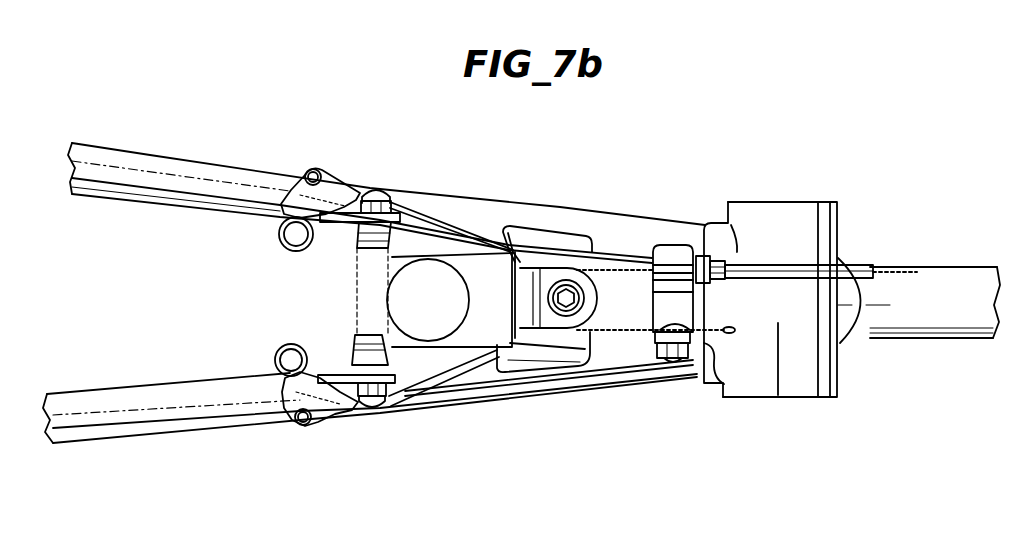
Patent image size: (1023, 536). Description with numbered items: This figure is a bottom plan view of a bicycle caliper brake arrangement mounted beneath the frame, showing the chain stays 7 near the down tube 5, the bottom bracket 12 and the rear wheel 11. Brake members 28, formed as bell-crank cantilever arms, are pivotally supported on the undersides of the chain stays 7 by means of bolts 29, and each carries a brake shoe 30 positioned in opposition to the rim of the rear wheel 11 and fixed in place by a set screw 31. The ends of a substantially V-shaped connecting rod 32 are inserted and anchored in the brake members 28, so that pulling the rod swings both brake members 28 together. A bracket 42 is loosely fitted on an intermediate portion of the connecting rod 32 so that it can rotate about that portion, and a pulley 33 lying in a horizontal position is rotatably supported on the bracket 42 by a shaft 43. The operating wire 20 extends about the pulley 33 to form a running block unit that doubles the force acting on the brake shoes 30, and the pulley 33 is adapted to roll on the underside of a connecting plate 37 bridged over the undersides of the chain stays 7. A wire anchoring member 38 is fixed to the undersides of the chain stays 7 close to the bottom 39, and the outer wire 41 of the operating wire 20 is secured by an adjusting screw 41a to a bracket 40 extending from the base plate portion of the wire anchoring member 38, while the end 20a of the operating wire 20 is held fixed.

The down tube 5 is at (910, 338).
The chain stays 7 is at (140, 162).
The rear wheel 11 is at (471, 298).
The bottom bracket 12 is at (810, 397).
The operating wire 20 is at (906, 270).
The end of operating wire 20a is at (730, 336).
The brake members 28 is at (305, 192).
The bolts 29 is at (283, 240).
The brake shoes 30 is at (355, 256).
The set screws 31 is at (380, 186).
The connecting rod 32 is at (440, 388).
The pulley 33 is at (548, 348).
The connecting plate 37 is at (542, 237).
The wire anchoring member 38 is at (706, 362).
The bottom 39 is at (672, 365).
The bracket 40 is at (667, 246).
The outer wire 41 is at (810, 263).
The adjusting screw 41a is at (712, 225).
The bracket 42 is at (548, 268).
The shaft 43 is at (576, 298).